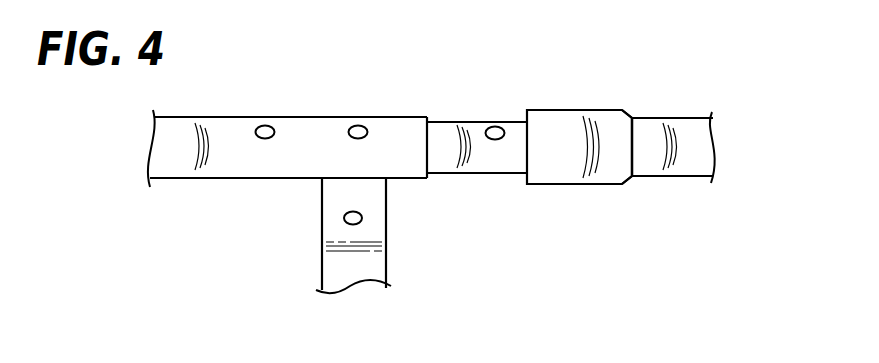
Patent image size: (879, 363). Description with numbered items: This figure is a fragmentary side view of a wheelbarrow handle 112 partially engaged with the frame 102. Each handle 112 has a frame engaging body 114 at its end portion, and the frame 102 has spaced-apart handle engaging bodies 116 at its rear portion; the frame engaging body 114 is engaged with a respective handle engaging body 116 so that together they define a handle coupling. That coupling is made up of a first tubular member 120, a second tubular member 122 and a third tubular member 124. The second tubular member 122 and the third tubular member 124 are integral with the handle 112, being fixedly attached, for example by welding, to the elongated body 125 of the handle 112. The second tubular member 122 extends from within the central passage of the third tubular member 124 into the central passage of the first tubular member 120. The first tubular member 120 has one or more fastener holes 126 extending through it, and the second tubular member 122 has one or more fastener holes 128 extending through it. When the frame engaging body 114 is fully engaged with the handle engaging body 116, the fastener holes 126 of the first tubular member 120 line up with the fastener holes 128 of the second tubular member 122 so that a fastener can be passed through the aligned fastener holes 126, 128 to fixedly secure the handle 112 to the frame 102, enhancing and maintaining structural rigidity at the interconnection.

The frame 102 is at (170, 168).
The handle 112 is at (693, 122).
The frame engaging body 114 is at (613, 110).
The handle engaging body 116 is at (300, 176).
The first tubular member 120 is at (307, 128).
The second tubular member 122 is at (490, 160).
The third tubular member 124 is at (565, 168).
The elongated body 125 is at (641, 175).
The fastener holes 126 is at (358, 125).
The fastener holes 128 is at (496, 126).